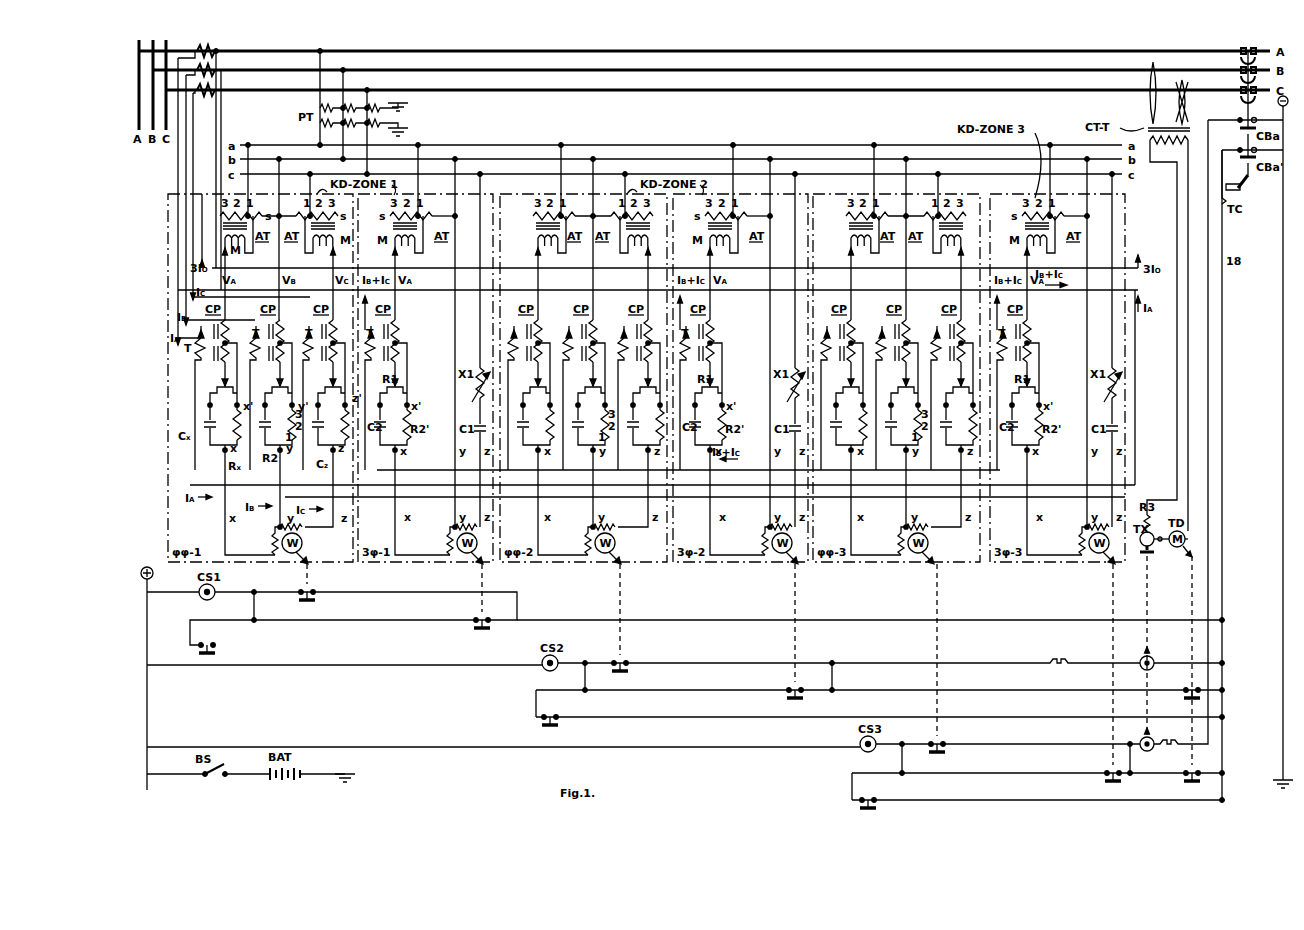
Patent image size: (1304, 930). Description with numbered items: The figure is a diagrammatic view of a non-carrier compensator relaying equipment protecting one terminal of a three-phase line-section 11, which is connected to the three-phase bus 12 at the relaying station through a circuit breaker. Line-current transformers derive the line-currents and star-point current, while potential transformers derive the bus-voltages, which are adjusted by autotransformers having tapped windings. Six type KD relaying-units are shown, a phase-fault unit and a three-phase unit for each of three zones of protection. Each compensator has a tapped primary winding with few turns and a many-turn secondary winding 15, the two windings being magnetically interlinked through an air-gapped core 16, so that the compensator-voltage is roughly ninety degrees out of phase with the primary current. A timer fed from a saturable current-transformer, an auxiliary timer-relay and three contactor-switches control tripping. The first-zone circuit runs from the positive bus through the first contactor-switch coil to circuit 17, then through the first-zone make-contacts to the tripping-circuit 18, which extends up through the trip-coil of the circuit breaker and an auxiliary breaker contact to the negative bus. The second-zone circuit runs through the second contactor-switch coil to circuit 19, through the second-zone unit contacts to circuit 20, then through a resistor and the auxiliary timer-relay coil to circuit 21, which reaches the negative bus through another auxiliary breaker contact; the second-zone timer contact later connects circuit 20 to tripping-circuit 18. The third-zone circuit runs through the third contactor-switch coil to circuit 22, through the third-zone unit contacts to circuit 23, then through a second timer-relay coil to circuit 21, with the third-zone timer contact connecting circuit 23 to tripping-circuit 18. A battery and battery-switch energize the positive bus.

The three-phase bus 12 is at (168, 53).
The three-phase line-section 11 is at (1256, 51).
The secondary winding 15 is at (224, 336).
The air-gapped core 16 is at (206, 377).
The circuit 17 is at (332, 616).
The tripping-circuit 18 is at (879, 478).
The circuit 19 is at (684, 692).
The circuit 20 is at (1023, 680).
The circuit 21 is at (920, 434).
The circuit 22 is at (643, 772).
The circuit 23 is at (1150, 761).